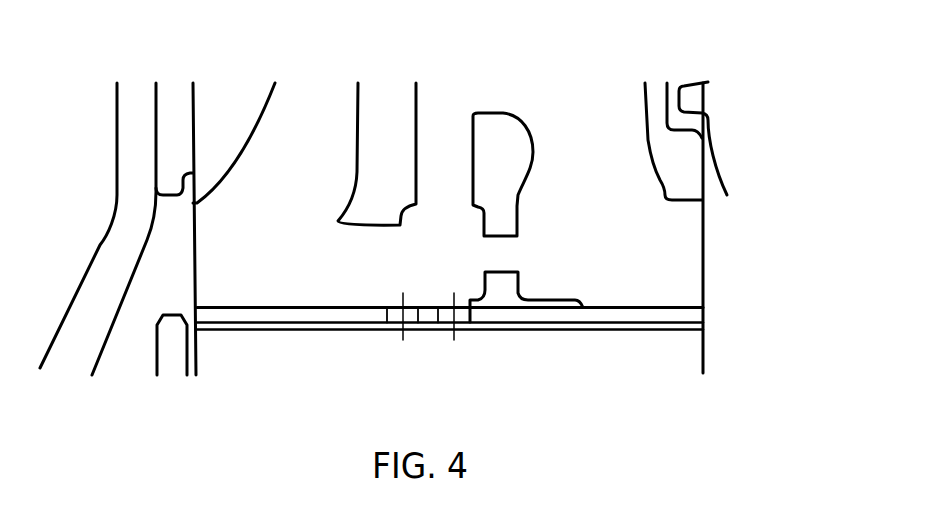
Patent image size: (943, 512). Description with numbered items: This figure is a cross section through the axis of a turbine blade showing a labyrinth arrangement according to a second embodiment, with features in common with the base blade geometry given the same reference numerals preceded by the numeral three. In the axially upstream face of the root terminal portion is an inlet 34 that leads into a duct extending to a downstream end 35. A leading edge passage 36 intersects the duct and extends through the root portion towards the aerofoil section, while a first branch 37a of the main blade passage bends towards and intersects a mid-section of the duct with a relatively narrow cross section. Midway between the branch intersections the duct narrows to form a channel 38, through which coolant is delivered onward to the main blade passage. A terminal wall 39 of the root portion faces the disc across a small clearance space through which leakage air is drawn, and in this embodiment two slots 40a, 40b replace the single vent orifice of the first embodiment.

The inlet 34 is at (213, 280).
The downstream end 35 is at (683, 251).
The leading edge passage 36 is at (252, 193).
The first branch 37a is at (453, 193).
The channel 38 is at (505, 252).
The terminal wall 39 is at (250, 316).
The slot 40a is at (400, 315).
The slot 40b is at (447, 318).